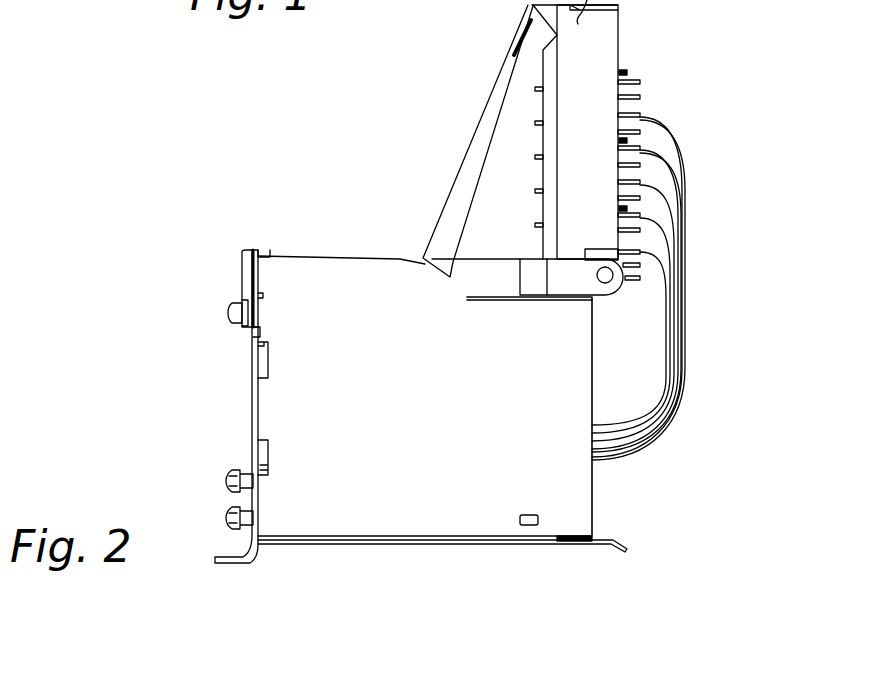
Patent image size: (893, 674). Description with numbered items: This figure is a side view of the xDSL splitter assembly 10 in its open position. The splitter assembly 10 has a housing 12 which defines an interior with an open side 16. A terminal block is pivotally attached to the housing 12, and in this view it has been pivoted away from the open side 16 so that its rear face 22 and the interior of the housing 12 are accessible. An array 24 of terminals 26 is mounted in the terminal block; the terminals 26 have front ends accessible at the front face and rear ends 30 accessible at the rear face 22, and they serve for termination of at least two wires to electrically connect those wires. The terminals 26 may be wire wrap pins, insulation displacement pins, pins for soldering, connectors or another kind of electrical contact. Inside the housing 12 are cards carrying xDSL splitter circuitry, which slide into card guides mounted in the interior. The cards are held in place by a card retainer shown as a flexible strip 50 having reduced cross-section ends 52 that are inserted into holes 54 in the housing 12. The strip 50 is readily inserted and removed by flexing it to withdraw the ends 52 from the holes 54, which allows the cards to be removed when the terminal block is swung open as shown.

The xDSL splitter assembly 10 is at (331, 553).
The housing 12 is at (439, 520).
The open side 16 is at (592, 488).
The rear face 22 is at (620, 30).
The array 24 is at (693, 102).
The terminals 26 is at (633, 80).
The rear ends 30 is at (640, 117).
The flexible strip 50 is at (553, 566).
The reduced cross-section ends 52 is at (574, 538).
The holes 54 is at (533, 513).